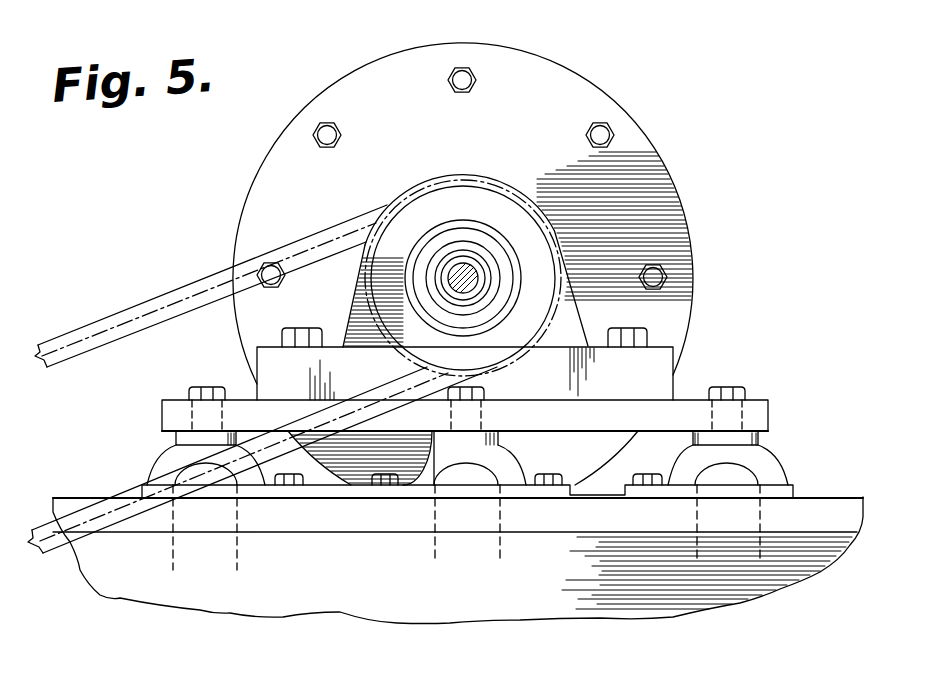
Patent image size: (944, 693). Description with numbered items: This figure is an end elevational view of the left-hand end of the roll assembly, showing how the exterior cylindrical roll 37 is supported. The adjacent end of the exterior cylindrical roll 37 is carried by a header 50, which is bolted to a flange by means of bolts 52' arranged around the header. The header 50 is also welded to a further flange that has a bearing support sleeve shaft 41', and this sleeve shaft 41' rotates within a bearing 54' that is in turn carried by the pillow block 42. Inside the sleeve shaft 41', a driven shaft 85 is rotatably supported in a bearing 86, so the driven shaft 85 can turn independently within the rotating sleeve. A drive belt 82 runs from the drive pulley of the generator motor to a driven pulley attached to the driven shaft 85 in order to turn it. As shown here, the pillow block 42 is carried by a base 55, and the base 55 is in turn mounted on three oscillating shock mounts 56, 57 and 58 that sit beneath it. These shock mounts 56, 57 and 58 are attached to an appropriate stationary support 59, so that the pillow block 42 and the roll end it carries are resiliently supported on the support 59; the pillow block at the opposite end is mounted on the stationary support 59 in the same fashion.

The exterior cylindrical roll 37 is at (585, 80).
The header 50 is at (620, 150).
The bolts 52' is at (366, 147).
The bearing 54' is at (465, 240).
The bearing 86 is at (473, 250).
The bearing support sleeve shaft 41' is at (423, 257).
The driven shaft 85 is at (478, 267).
The drive belt 82 is at (83, 328).
The pillow block 42 is at (563, 303).
The base 55 is at (685, 410).
The oscillating shock mount 56 is at (765, 462).
The oscillating shock mount 57 is at (507, 472).
The oscillating shock mount 58 is at (250, 473).
The stationary support 59 is at (395, 603).